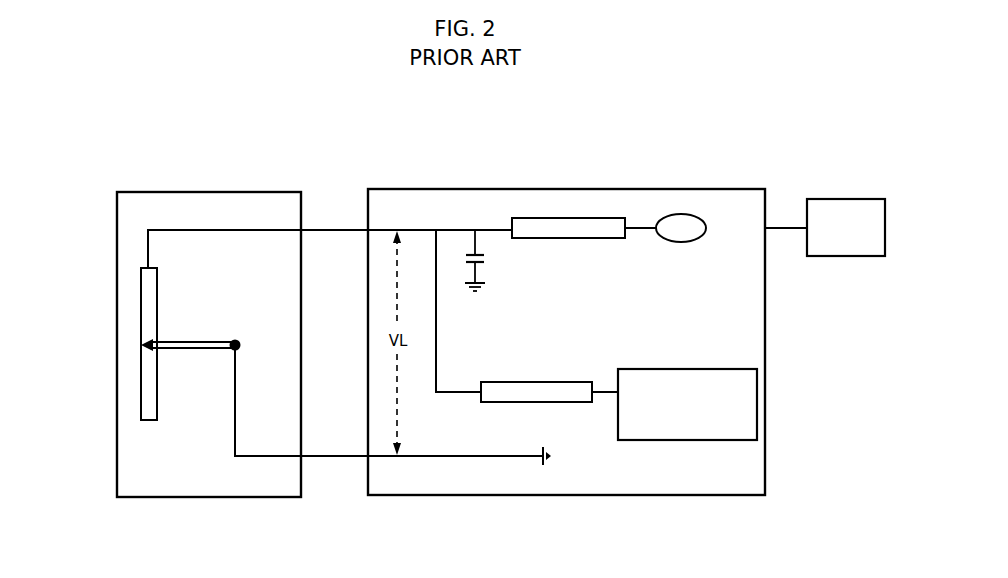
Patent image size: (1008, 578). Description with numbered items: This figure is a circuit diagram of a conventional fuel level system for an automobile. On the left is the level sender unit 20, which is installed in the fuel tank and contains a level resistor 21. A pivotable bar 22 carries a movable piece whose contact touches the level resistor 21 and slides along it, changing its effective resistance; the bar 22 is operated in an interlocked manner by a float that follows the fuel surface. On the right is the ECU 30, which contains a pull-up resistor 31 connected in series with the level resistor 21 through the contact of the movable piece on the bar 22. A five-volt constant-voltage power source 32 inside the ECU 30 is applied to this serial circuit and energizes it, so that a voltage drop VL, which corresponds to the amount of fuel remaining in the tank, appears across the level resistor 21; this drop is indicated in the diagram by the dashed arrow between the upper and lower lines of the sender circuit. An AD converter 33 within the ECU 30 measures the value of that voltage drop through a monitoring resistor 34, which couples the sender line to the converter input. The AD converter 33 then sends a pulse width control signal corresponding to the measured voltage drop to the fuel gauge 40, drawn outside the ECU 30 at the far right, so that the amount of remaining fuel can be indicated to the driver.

The level sender unit 20 is at (212, 180).
The level resistor 21 is at (147, 390).
The pivotable bar 22 is at (190, 349).
The ECU 30 is at (434, 180).
The pull-up resistor 31 is at (560, 218).
The 5V constant-voltage power source 32 is at (679, 214).
The AD converter 33 is at (685, 441).
The monitoring resistor 34 is at (560, 403).
The fuel gauge 40 is at (847, 198).